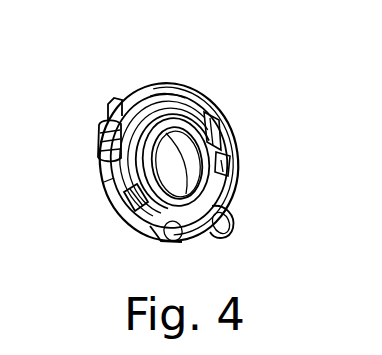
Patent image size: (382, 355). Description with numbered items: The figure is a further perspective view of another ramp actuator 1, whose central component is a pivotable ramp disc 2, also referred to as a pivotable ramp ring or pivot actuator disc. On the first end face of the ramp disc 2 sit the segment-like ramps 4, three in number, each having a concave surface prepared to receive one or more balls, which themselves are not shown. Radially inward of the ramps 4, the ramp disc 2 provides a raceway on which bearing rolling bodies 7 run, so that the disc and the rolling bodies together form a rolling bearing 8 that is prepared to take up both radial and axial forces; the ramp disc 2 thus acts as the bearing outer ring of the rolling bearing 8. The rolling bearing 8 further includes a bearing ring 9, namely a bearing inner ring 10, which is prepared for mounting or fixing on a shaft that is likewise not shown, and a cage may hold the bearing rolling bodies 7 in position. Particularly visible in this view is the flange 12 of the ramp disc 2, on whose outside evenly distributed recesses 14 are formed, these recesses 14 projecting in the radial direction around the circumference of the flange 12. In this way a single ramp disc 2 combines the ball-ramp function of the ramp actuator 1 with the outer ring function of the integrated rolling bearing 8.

The ramp actuator 1 is at (203, 88).
The ramp disc 2 is at (101, 122).
The ramp 4 is at (167, 93).
The bearing rolling bodies 7 is at (118, 164).
The rolling bearing 8 is at (128, 206).
The bearing ring 9 is at (228, 112).
The bearing inner ring 10 is at (221, 138).
The flange 12 is at (159, 235).
The recesses 14 is at (116, 104).